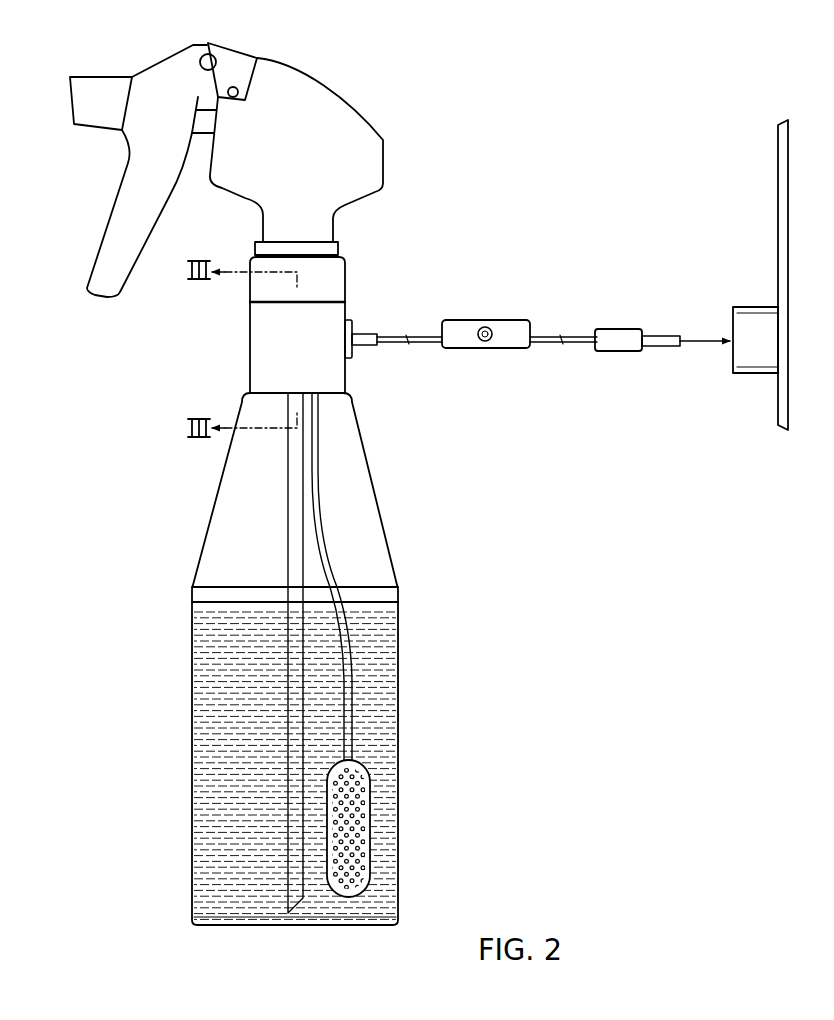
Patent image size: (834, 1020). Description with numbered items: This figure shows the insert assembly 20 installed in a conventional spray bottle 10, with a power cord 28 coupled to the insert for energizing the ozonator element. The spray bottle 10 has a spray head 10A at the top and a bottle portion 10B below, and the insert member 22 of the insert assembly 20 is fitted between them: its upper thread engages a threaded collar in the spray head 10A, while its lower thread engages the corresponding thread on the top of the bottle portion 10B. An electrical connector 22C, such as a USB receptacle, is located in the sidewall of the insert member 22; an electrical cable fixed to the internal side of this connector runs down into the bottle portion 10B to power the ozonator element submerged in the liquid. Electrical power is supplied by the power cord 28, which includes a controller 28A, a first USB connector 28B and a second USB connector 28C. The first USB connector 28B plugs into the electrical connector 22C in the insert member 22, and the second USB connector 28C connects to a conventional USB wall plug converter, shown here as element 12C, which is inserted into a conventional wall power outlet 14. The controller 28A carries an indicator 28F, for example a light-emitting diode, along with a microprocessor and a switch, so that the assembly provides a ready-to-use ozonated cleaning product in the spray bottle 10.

The conventional spray bottle 10 is at (174, 597).
The spray head 10A is at (340, 108).
The bottle portion 10B is at (387, 547).
The insert assembly 20 is at (354, 280).
The insert member 22 is at (263, 342).
The electrical connector 22C is at (350, 322).
The power cord 28 is at (683, 387).
The controller 28A is at (513, 338).
The first USB connector 28B is at (398, 336).
The second USB connector 28C is at (618, 333).
The indicator 28F is at (480, 338).
The wall receptacle 12C is at (748, 368).
The wall power outlet 14 is at (778, 152).